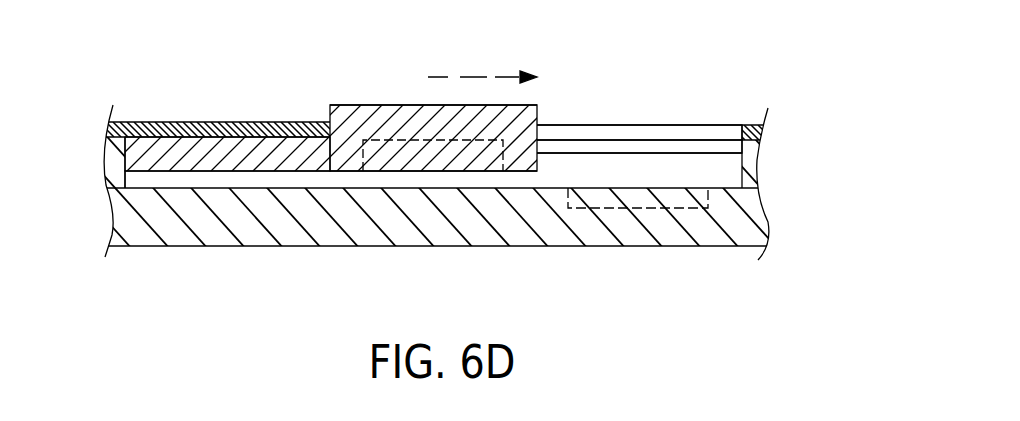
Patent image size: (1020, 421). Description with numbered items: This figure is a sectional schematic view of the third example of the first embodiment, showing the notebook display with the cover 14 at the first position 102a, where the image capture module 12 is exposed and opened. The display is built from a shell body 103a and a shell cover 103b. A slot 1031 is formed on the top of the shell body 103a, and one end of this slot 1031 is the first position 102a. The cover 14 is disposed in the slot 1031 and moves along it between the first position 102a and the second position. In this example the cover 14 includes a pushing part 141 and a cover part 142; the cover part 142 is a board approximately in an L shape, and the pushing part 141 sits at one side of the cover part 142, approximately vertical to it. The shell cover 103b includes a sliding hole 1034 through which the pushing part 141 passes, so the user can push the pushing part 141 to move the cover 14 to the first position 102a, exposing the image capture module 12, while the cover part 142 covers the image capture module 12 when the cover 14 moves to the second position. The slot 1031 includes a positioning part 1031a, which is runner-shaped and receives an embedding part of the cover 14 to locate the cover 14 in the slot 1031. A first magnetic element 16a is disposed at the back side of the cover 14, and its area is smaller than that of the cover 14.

The shell body 103a is at (183, 225).
The shell cover 103b is at (205, 127).
The first position 102a is at (472, 188).
The cover part 142 is at (290, 152).
The cover 14 is at (372, 118).
The pushing part 141 is at (407, 103).
The first magnetic element 16a is at (400, 158).
The slot 1031 is at (253, 178).
The sliding hole 1034 is at (607, 133).
The positioning part 1031a is at (690, 147).
The image capture module 12 is at (640, 200).